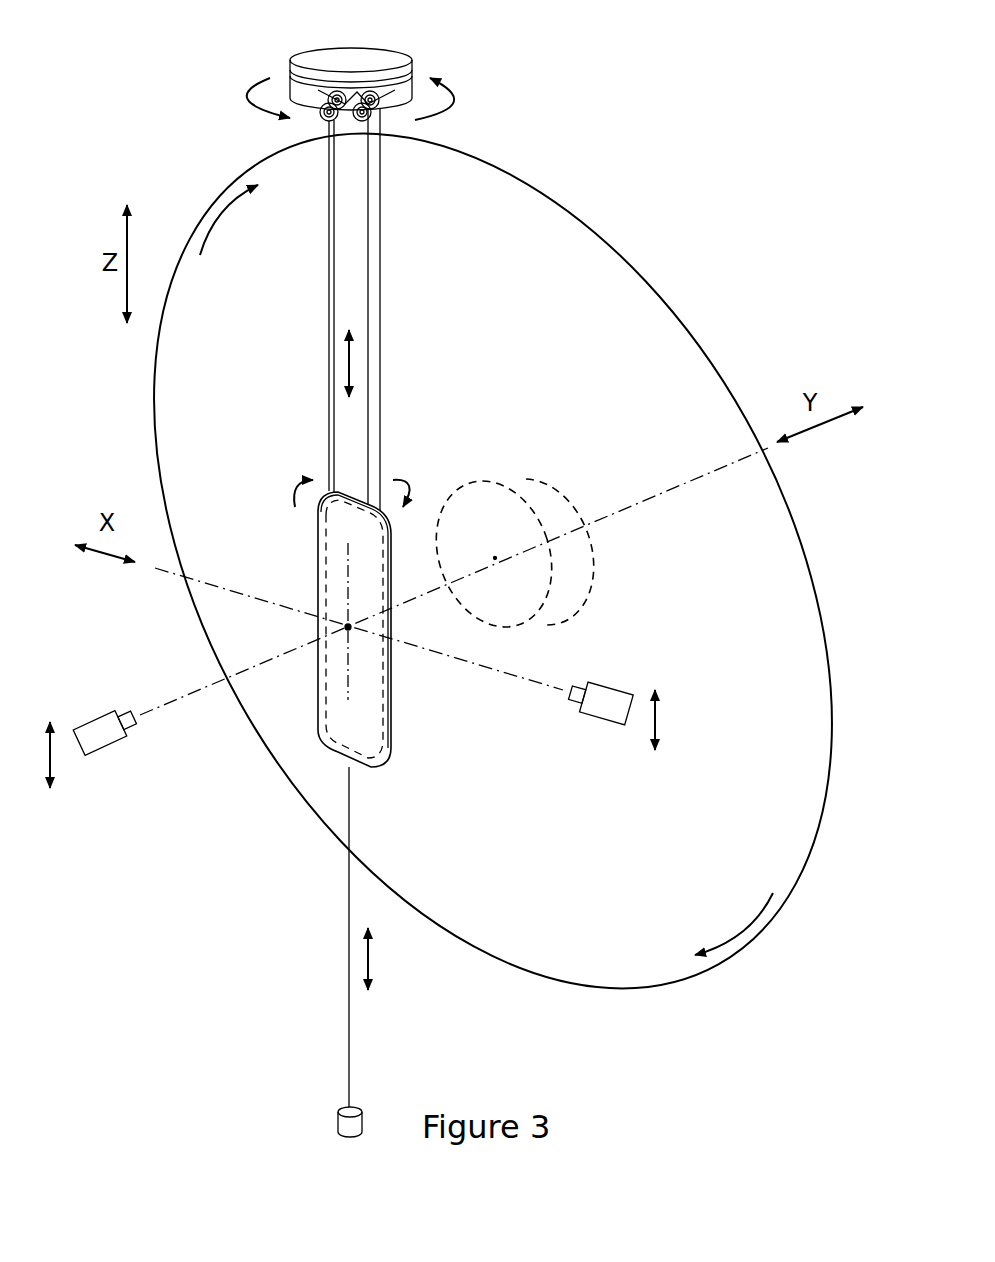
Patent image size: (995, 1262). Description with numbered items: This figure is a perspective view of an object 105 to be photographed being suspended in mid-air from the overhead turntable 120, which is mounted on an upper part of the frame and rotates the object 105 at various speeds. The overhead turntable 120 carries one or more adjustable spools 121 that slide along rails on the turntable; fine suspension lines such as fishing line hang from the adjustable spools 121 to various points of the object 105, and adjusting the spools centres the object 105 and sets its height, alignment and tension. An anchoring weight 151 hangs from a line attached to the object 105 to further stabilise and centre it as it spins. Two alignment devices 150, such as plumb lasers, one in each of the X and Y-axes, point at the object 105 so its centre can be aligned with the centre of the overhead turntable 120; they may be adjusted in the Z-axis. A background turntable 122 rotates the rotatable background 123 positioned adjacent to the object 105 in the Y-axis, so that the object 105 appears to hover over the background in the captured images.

The object 105 is at (340, 725).
The overhead turntable 120 is at (350, 58).
The adjustable spool 121 is at (392, 105).
The background turntable 122 is at (567, 572).
The rotatable background 123 is at (628, 932).
The alignment device 150 is at (103, 742).
The anchoring weight 151 is at (328, 1129).